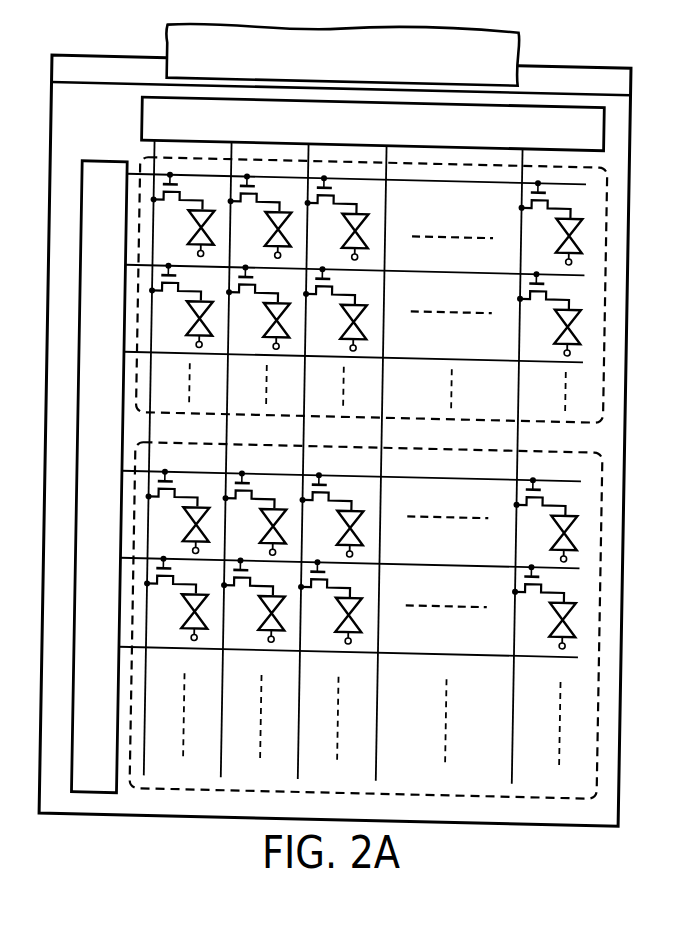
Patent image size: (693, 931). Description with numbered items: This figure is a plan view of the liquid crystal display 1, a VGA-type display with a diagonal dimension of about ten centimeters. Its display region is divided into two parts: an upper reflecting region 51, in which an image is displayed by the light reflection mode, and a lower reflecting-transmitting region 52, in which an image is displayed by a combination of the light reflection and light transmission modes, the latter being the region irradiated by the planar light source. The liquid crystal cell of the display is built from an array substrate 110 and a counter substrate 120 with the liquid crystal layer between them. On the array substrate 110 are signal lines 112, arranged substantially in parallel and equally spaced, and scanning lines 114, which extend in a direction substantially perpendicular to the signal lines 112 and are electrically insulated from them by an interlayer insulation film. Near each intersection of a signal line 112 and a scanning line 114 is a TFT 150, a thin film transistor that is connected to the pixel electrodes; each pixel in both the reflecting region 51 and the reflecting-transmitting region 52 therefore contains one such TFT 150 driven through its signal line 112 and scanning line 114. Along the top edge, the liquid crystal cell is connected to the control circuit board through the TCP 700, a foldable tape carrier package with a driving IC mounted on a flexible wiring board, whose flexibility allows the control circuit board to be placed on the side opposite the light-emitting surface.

The liquid crystal display 1 is at (613, 32).
The TCP 700 is at (518, 40).
The array substrate 110 is at (140, 65).
The counter substrate 120 is at (83, 96).
The TFT 150 is at (342, 191).
The scanning line 114 is at (454, 173).
The signal line 112 is at (388, 725).
The reflecting region 51 is at (609, 227).
The reflecting-transmitting region 52 is at (609, 525).